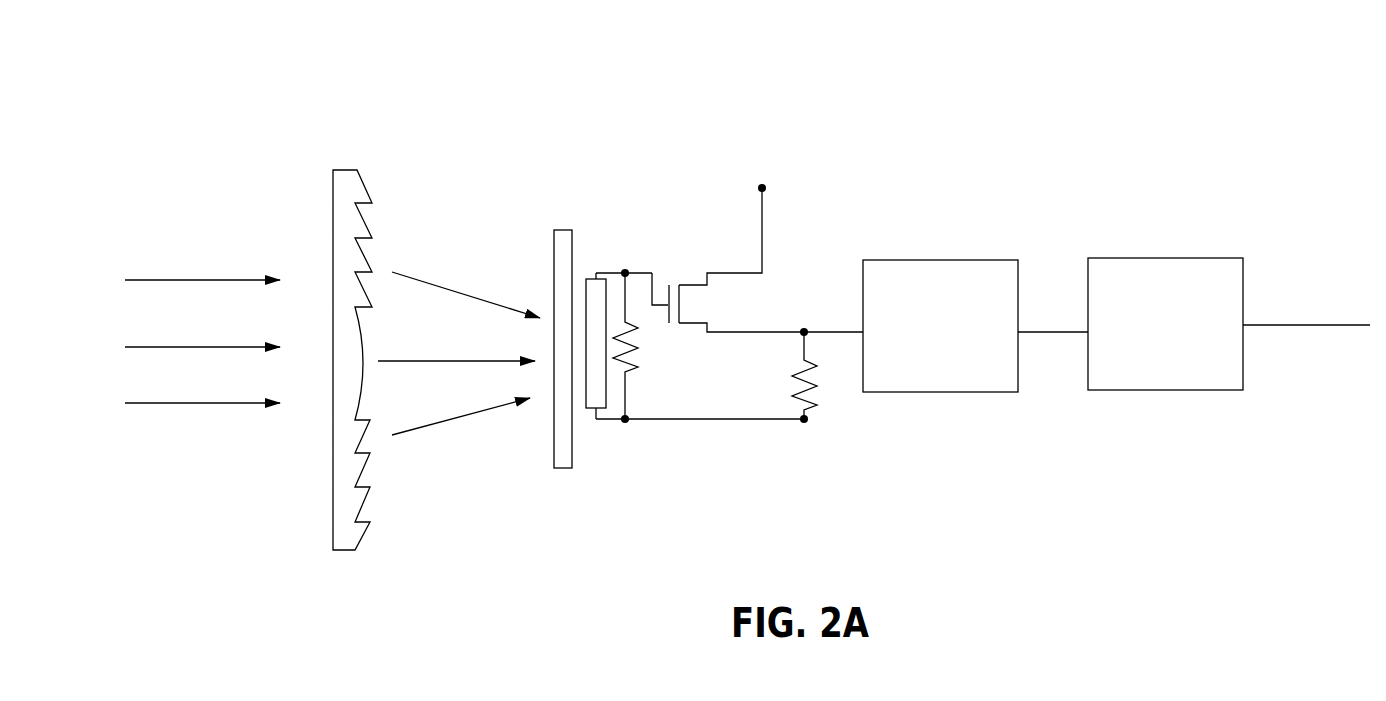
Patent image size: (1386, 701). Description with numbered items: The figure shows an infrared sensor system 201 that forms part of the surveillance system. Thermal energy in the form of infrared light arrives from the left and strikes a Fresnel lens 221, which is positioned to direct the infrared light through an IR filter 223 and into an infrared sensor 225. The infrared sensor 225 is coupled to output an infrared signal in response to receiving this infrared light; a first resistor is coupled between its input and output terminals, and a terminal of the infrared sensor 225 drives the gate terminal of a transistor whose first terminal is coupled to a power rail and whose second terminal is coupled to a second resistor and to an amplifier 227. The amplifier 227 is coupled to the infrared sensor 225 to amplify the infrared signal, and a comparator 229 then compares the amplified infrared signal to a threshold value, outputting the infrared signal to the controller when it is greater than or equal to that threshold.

The infrared sensor system 201 is at (768, 48).
The Fresnel lens 221 is at (333, 133).
The IR filter 223 is at (562, 243).
The infrared sensor 225 is at (593, 287).
The amplifier 227 is at (943, 336).
The comparator 229 is at (1148, 348).